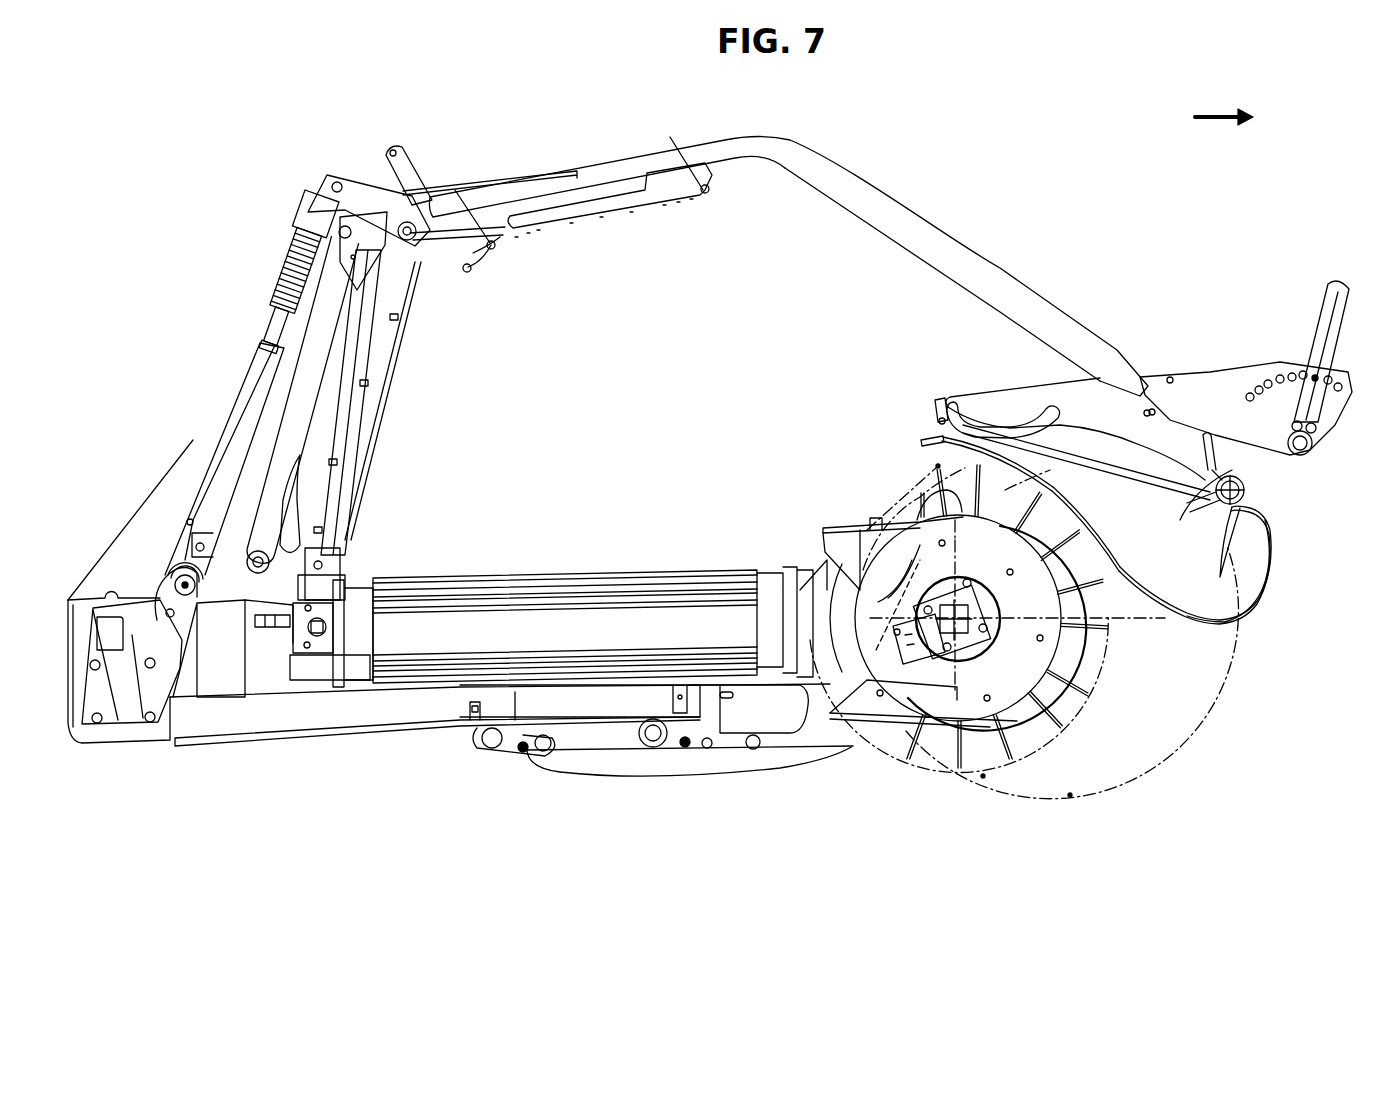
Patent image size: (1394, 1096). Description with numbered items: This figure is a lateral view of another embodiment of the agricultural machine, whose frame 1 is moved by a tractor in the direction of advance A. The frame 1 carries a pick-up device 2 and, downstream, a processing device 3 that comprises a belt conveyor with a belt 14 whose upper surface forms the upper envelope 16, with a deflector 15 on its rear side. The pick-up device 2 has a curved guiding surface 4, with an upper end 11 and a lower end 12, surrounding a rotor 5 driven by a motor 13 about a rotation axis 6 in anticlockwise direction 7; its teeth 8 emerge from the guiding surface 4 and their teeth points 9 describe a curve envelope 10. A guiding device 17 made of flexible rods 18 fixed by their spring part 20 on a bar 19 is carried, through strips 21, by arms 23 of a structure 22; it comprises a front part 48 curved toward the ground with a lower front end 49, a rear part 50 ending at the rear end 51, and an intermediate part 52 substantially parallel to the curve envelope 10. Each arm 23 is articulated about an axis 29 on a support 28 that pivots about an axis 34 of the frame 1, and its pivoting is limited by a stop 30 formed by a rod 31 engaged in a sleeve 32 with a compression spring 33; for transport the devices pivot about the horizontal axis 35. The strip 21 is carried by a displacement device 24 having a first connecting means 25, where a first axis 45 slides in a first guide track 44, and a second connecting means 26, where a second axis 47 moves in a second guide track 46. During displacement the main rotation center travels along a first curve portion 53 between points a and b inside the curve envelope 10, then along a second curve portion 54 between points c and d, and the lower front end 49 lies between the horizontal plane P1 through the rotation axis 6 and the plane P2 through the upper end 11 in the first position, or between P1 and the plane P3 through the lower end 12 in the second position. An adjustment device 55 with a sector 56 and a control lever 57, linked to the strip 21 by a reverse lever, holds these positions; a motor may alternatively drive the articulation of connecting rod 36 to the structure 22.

The frame 1 is at (102, 765).
The pick-up device 2 is at (812, 518).
The processing device 3 is at (512, 556).
The guiding surface 4 is at (1110, 629).
The rotor 5 is at (1125, 652).
The rotation axis 6 is at (962, 590).
The anticlockwise direction 7 is at (1135, 715).
The teeth 8 is at (1053, 715).
The teeth points 9 is at (1082, 718).
The curve envelope 10 is at (1120, 590).
The upper end 11 is at (925, 487).
The lower end 12 is at (950, 760).
The motor 13 is at (983, 640).
The belt 14 is at (655, 620).
The deflector 15 is at (598, 231).
The upper envelope 16 is at (715, 570).
The guiding device 17 is at (1290, 547).
The flexible rods 18 is at (1278, 565).
The bar 19 is at (1228, 575).
The spring part 20 is at (1200, 505).
The strip 21 is at (1135, 473).
The structure 22 is at (893, 180).
The arm 23 is at (925, 232).
The displacement device 24 is at (1249, 320).
The first connecting means 25 is at (992, 405).
The second connecting means 26 is at (1206, 422).
The support 28 is at (302, 462).
The articulation axis 29 is at (395, 195).
The stop 30 is at (248, 326).
The rod 31 is at (225, 438).
The sleeve 32 is at (308, 223).
The compression spring 33 is at (278, 285).
The articulation axis 34 is at (251, 543).
The horizontal axis 35 is at (178, 580).
The connecting rod 36 is at (350, 425).
The first guide track 44 is at (1020, 418).
The first axis 45 is at (940, 418).
The second guide track 46 is at (1250, 505).
The second axis 47 is at (1172, 474).
The front part 48 is at (1280, 603).
The lower front end 49 is at (1230, 625).
The rear part 50 is at (927, 428).
The rear end 51 is at (918, 440).
The intermediate part 52 is at (1084, 498).
The first curve portion 53 is at (896, 590).
The second curve portion 54 is at (1017, 787).
The adjustment device 55 is at (1339, 268).
The sector 56 is at (1280, 375).
The control lever 57 is at (1330, 338).
The point of intersection a is at (936, 466).
The point of intersection b is at (984, 779).
The point c is at (876, 650).
The point d is at (1071, 797).
The first horizontal plane P1 is at (1022, 617).
The second horizontal plane P2 is at (1007, 490).
The third horizontal plane P3 is at (1140, 728).
The direction of advance A is at (1224, 96).